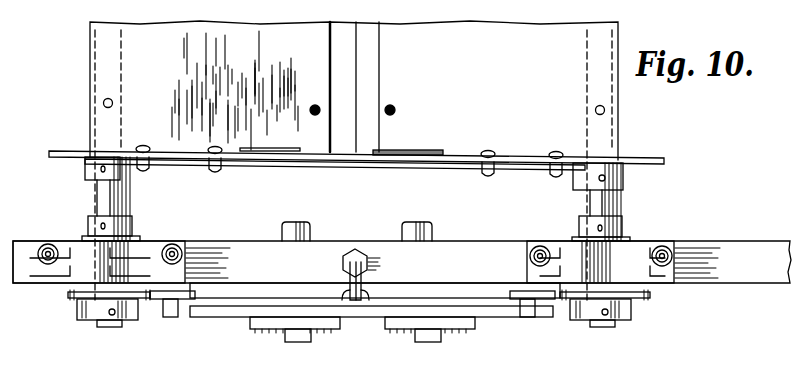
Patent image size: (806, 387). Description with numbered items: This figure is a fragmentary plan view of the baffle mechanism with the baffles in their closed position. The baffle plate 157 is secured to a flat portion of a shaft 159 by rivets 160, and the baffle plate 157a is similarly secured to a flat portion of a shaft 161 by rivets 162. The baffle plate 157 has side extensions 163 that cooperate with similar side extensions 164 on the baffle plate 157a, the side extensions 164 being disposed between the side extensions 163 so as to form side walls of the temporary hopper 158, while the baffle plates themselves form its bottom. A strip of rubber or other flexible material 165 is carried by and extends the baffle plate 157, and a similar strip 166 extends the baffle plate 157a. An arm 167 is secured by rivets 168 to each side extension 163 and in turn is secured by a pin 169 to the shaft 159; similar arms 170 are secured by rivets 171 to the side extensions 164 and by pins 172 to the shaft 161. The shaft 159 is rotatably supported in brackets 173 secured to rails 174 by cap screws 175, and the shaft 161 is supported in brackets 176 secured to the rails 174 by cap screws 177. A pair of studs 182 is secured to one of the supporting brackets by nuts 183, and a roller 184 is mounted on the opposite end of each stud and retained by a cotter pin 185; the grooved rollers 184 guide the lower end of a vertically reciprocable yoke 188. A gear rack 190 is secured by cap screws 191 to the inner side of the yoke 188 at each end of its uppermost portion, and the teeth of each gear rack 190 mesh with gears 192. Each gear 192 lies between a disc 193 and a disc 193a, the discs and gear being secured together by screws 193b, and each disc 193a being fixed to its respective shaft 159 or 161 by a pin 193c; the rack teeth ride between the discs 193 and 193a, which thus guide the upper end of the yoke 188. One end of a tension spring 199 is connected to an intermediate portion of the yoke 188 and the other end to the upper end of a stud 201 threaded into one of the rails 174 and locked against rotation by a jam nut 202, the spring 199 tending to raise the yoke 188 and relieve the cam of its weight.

The baffle plate 157 is at (612, 140).
The baffle plate 157a is at (90, 131).
The temporary hopper 158 is at (376, 160).
The shaft 159 is at (612, 208).
The rivets 160 is at (595, 112).
The shaft 161 is at (94, 88).
The rivets 162 is at (112, 105).
The side extensions 163 is at (454, 168).
The side extensions 164 is at (286, 148).
The strip of flexible material 165 is at (381, 62).
The strip of flexible material 166 is at (330, 60).
The arm 167 is at (530, 170).
The rivets 168 is at (488, 178).
The pin 169 is at (620, 180).
The arms 170 is at (192, 160).
The rivets 171 is at (226, 140).
The pins 172 is at (97, 181).
The brackets 173 is at (680, 272).
The rails 174 is at (760, 240).
The cap screws 175 is at (540, 246).
The brackets 176 is at (190, 266).
The cap screws 177 is at (48, 244).
The studs 182 is at (296, 221).
The nuts 183 is at (310, 226).
The roller 184 is at (262, 330).
The cotter pin 185 is at (298, 343).
The yoke 188 is at (502, 318).
The gear rack 190 is at (196, 298).
The cap screws 191 is at (171, 320).
The gears 192 is at (72, 304).
The disc 193 is at (66, 295).
The disc 193a is at (72, 312).
The screws 193b is at (84, 322).
The pin 193c is at (112, 328).
The tension spring 199 is at (346, 290).
The stud 201 is at (366, 274).
The jam nut 202 is at (360, 252).